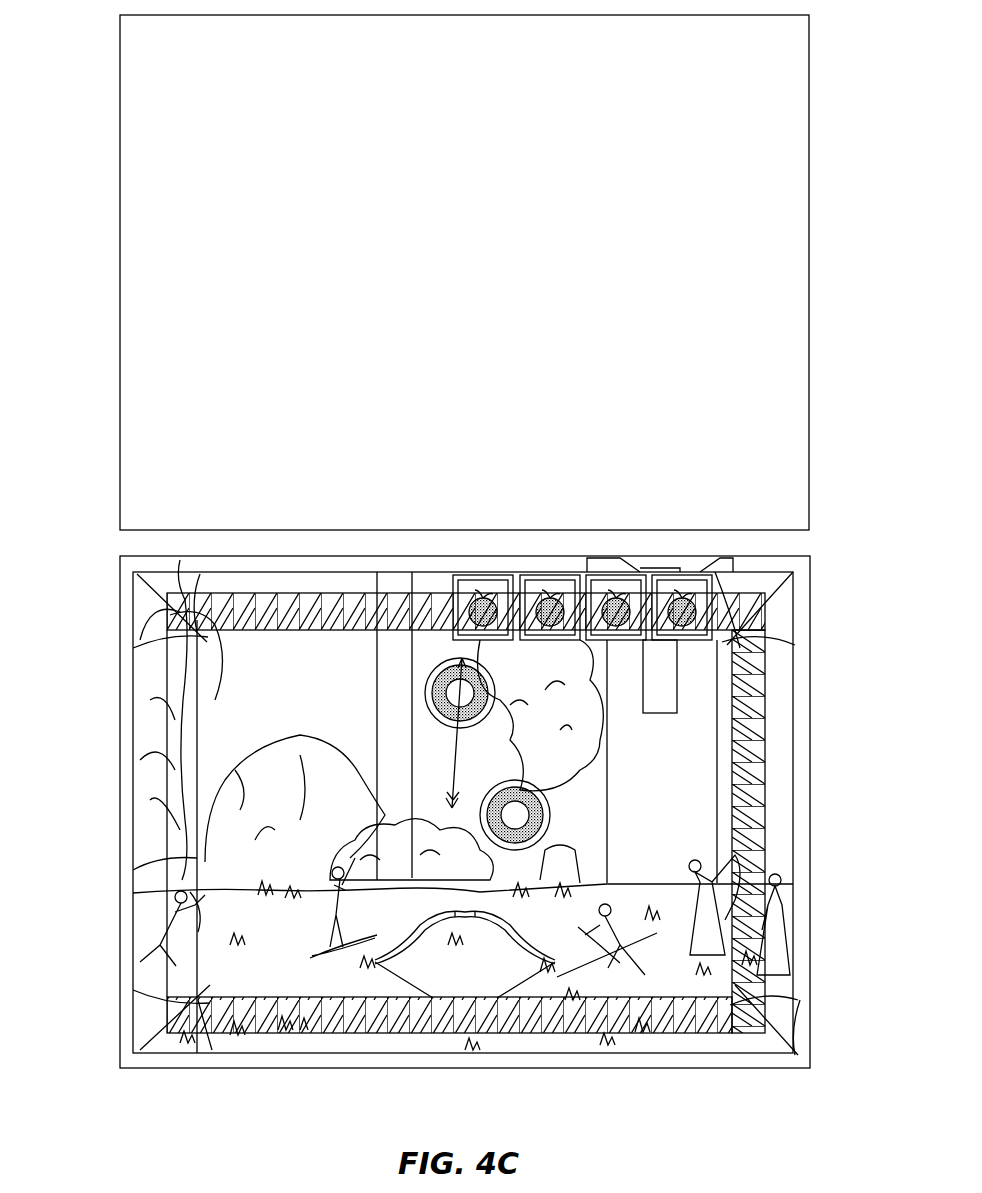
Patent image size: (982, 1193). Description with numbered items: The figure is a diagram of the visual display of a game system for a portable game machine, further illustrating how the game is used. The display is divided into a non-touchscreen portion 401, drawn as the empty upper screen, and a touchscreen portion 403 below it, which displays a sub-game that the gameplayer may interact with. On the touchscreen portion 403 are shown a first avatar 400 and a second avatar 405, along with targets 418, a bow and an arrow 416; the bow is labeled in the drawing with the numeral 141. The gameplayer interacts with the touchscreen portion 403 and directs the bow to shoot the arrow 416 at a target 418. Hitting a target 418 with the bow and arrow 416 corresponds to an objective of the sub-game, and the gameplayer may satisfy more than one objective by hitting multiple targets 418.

The non-touchscreen portion 401 is at (811, 185).
The first avatar 400 is at (725, 885).
The touchscreen portion 403 is at (120, 814).
The arrow 416 is at (453, 765).
The targets 418 is at (548, 806).
The second avatar 405 is at (358, 912).
The bow 141 is at (410, 957).